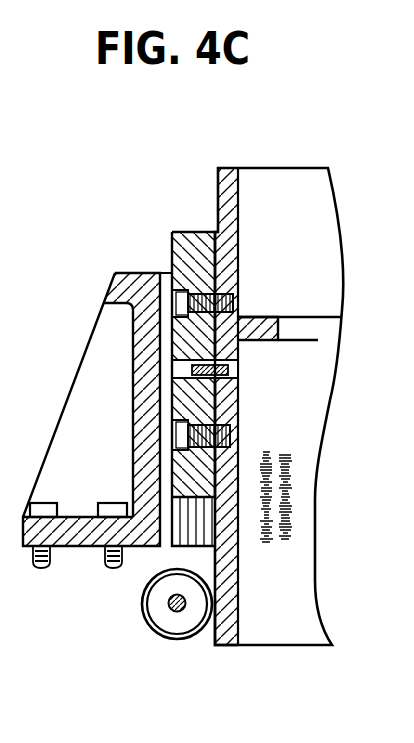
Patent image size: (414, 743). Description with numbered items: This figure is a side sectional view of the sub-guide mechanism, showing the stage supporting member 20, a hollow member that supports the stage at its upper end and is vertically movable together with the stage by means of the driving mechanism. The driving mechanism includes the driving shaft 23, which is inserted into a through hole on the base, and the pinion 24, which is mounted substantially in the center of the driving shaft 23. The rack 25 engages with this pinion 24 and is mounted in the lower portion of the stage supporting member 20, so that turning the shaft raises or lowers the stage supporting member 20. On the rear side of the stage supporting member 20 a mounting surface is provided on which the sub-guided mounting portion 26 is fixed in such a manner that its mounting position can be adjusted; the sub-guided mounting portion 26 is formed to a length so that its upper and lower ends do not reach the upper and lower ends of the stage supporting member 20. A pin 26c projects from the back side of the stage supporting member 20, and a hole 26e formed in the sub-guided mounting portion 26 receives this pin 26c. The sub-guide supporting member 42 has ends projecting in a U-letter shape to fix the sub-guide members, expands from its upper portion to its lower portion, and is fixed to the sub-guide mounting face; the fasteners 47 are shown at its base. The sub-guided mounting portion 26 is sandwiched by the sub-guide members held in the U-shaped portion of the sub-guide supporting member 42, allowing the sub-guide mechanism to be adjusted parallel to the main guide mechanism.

The stage supporting member 20 is at (218, 169).
The driving shaft 23 is at (176, 612).
The pinion 24 is at (142, 596).
The rack 25 is at (208, 638).
The sub-guided mounting portion 26 is at (195, 232).
The pin 26c is at (236, 369).
The hole 26e is at (192, 370).
The sub-guide supporting member 42 is at (80, 547).
The fastening bolts 47 is at (29, 497).